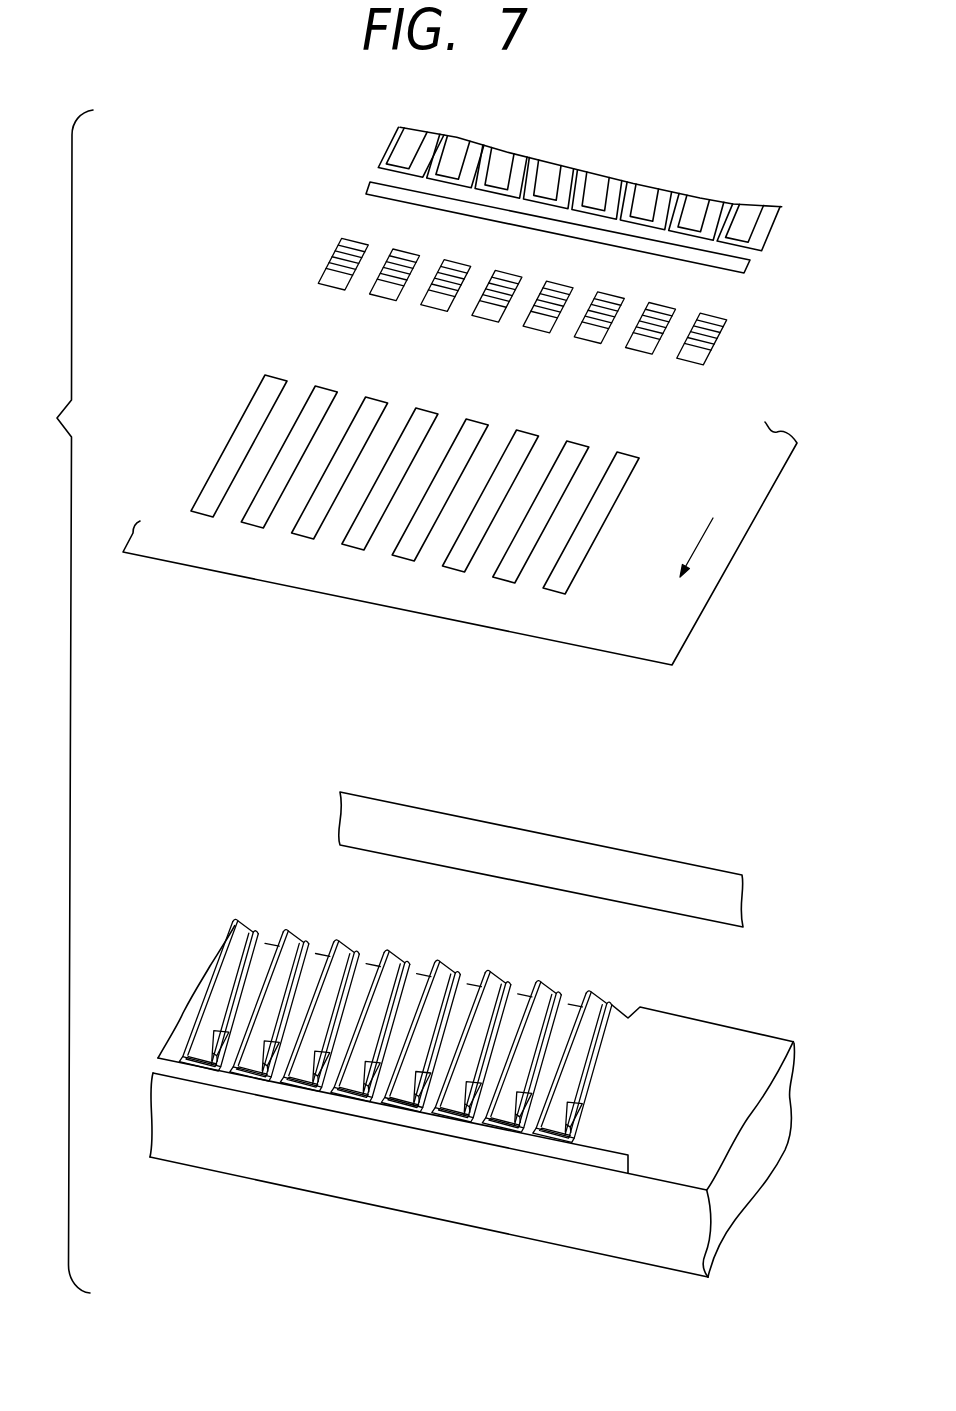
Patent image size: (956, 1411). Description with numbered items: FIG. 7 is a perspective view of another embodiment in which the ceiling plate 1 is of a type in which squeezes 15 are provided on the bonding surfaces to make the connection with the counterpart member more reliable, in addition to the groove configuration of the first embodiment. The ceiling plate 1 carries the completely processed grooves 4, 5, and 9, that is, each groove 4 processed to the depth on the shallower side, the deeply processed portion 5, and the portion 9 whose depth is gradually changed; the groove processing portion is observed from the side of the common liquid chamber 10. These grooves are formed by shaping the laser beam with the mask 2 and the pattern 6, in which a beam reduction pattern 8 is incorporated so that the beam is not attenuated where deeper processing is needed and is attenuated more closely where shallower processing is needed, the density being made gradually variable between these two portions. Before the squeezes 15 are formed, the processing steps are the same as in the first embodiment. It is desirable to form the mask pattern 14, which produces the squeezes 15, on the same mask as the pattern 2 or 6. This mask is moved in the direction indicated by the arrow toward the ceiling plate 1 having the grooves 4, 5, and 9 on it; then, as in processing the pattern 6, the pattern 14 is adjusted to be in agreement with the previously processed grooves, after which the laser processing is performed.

The ceiling plate 1 is at (695, 1237).
The mask 2 is at (560, 582).
The grooves 4 is at (421, 1041).
The deeply processed portion 5 is at (590, 1146).
The pattern 6 is at (705, 358).
The beam reduction pattern 8 is at (533, 322).
The portion with gradually changed depth 9 is at (594, 1117).
The common liquid chamber 10 is at (527, 955).
The mask pattern 14 is at (382, 192).
The squeezes 15 is at (625, 985).